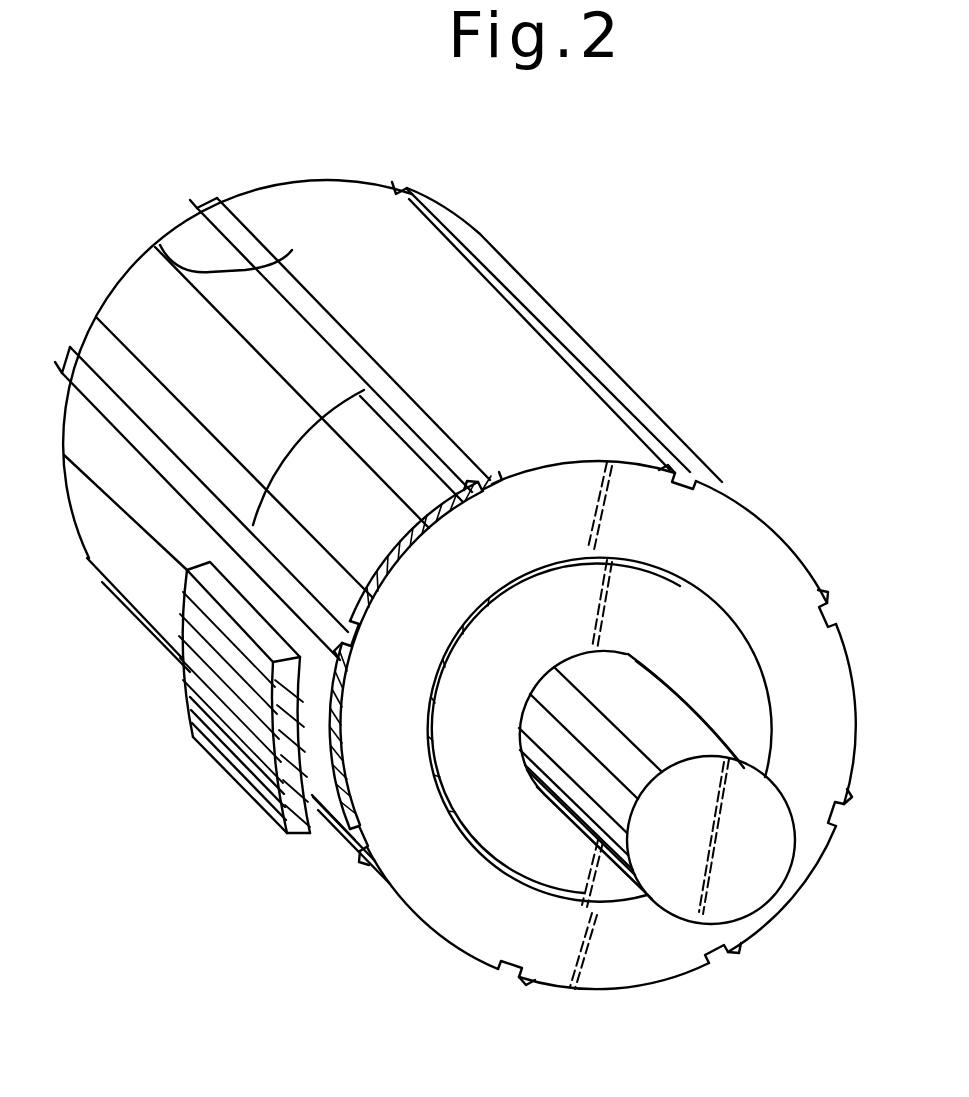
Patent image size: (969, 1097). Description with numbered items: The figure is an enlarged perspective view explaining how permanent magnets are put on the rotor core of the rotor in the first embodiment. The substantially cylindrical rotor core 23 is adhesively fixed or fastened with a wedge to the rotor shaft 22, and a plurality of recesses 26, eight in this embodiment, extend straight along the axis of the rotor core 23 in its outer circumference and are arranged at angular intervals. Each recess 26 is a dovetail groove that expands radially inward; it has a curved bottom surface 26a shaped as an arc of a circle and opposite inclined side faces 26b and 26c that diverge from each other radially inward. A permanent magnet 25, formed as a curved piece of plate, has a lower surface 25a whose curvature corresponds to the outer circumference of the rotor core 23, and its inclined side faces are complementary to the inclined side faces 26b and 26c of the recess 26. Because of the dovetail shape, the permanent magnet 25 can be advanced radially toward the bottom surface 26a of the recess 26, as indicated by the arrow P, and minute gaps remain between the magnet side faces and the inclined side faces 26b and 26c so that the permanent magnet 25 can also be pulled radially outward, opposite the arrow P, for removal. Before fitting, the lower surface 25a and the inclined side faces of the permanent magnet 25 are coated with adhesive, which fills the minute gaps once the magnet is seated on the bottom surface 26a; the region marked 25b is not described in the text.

The rotor shaft 22 is at (657, 822).
The rotor core 23 is at (459, 589).
The permanent magnet 25 is at (235, 720).
The lower surface 25a is at (295, 682).
The side face of magnet 25b is at (231, 765).
The recess 26 is at (247, 207).
The bottom surface 26a is at (268, 397).
The inclined side face 26b is at (215, 392).
The inclined side face 26c is at (271, 335).
The arrow P is at (336, 737).